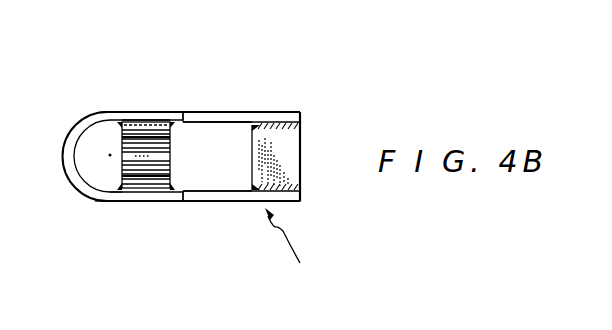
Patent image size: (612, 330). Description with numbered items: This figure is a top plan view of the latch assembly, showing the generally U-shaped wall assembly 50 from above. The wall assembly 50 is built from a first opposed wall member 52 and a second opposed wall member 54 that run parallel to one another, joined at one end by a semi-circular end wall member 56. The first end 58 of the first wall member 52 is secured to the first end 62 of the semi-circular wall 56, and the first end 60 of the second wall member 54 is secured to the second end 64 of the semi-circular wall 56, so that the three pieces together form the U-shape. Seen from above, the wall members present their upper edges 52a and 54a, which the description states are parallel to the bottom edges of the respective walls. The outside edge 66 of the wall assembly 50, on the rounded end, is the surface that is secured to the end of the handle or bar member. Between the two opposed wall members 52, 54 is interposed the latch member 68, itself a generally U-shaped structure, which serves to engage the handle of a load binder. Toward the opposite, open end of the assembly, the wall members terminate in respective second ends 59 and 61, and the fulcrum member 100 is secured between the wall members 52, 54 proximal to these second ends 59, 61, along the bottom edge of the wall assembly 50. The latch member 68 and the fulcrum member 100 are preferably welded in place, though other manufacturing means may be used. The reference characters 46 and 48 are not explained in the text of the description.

The housing top wall 46 is at (221, 125).
The chamber 48 is at (214, 184).
The generally U-shaped wall assembly 50 is at (289, 246).
The first opposed wall member 52 is at (248, 117).
The upper edge of first opposed wall member 52a is at (168, 116).
The second opposed wall member 54 is at (203, 195).
The upper edge of second opposed wall member 54a is at (173, 196).
The semi-circular end wall member 56 is at (72, 170).
The first end of first opposed wall member 58 is at (125, 121).
The second end of first opposed wall member 59 is at (301, 115).
The first end of second opposed wall member 60 is at (121, 196).
The second end of second opposed wall member 61 is at (302, 201).
The first end of semi-circular wall 62 is at (112, 114).
The second end of semi-circular wall member 64 is at (105, 200).
The outside edge of wall assembly 66 is at (72, 128).
The latch member 68 is at (172, 167).
The fulcrum member 100 is at (290, 170).